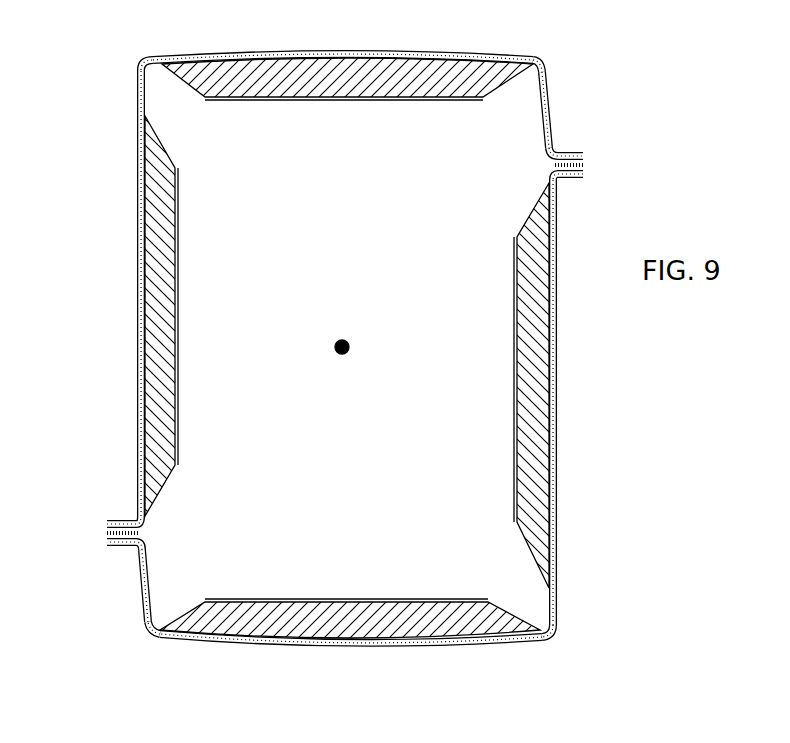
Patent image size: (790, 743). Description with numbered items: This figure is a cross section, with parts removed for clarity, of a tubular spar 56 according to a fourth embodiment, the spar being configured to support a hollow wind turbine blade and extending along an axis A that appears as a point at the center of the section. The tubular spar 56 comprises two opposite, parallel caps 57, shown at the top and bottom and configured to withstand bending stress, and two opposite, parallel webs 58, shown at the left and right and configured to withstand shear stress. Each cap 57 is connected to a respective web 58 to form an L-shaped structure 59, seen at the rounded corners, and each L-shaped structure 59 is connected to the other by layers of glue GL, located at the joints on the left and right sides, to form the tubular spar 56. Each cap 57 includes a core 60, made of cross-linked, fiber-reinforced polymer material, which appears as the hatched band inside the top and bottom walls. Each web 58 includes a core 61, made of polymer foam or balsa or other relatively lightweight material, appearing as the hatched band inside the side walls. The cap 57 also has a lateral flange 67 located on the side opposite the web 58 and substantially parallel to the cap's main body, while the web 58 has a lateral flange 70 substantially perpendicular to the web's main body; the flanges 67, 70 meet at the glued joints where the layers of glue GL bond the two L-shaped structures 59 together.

The tubular spar 56 is at (611, 123).
The cap 57 is at (403, 36).
The web 58 is at (126, 356).
The L-shaped structure 59 is at (133, 57).
The core 60 is at (338, 78).
The core 61 is at (155, 393).
The lateral flange 67 is at (568, 153).
The lateral flange 70 is at (571, 180).
The layers of glue GL is at (585, 165).
The axis A is at (350, 339).